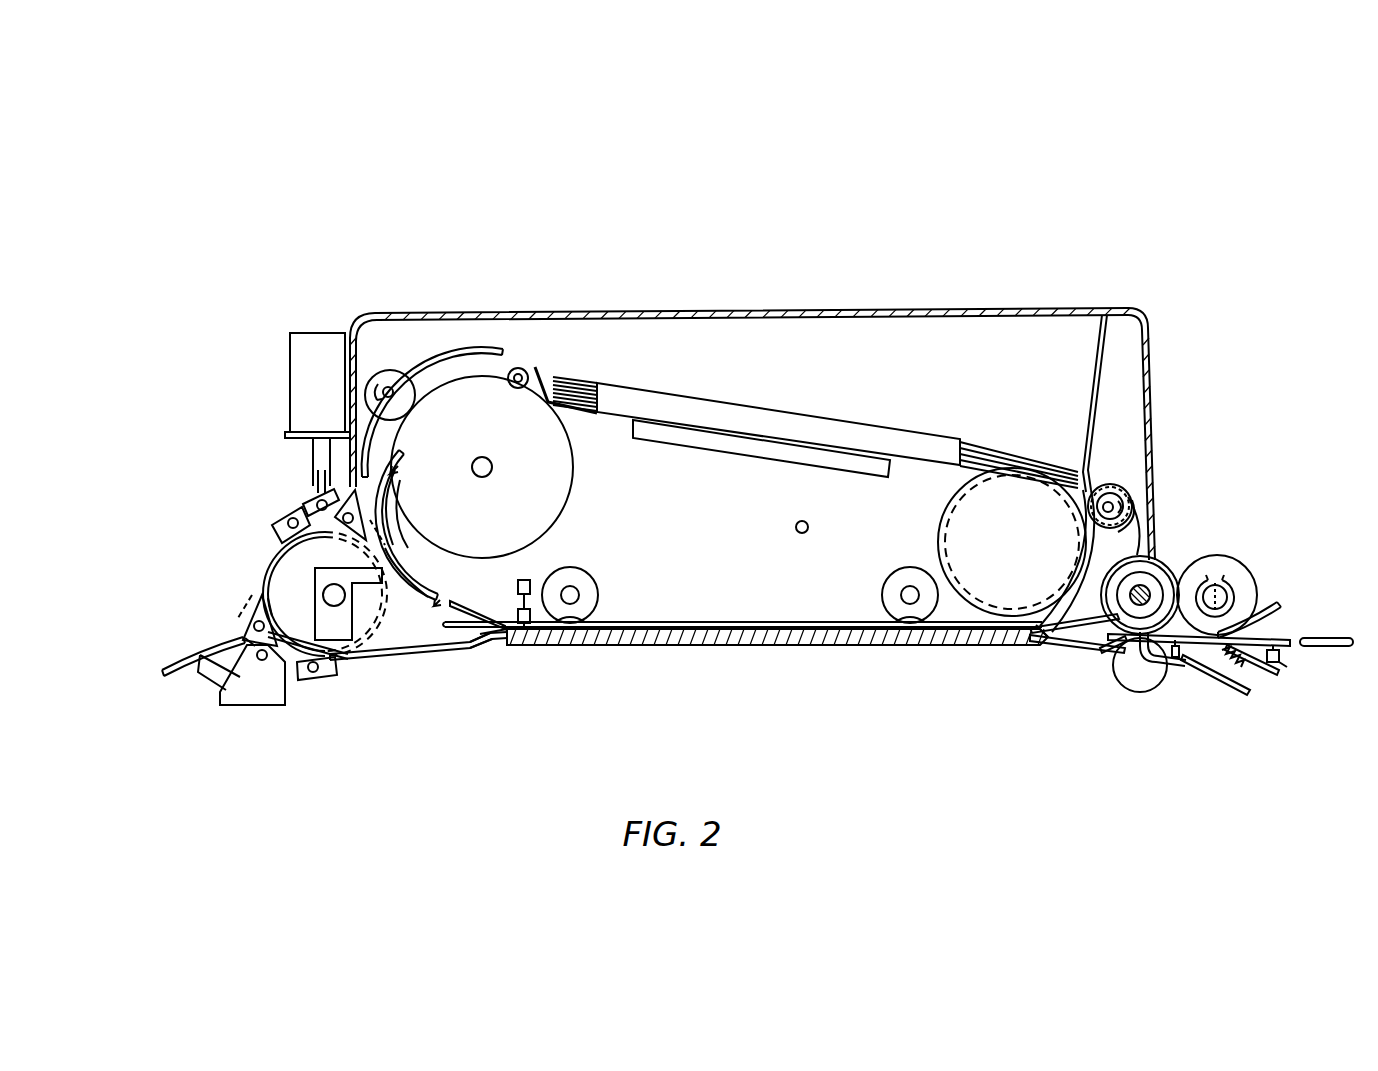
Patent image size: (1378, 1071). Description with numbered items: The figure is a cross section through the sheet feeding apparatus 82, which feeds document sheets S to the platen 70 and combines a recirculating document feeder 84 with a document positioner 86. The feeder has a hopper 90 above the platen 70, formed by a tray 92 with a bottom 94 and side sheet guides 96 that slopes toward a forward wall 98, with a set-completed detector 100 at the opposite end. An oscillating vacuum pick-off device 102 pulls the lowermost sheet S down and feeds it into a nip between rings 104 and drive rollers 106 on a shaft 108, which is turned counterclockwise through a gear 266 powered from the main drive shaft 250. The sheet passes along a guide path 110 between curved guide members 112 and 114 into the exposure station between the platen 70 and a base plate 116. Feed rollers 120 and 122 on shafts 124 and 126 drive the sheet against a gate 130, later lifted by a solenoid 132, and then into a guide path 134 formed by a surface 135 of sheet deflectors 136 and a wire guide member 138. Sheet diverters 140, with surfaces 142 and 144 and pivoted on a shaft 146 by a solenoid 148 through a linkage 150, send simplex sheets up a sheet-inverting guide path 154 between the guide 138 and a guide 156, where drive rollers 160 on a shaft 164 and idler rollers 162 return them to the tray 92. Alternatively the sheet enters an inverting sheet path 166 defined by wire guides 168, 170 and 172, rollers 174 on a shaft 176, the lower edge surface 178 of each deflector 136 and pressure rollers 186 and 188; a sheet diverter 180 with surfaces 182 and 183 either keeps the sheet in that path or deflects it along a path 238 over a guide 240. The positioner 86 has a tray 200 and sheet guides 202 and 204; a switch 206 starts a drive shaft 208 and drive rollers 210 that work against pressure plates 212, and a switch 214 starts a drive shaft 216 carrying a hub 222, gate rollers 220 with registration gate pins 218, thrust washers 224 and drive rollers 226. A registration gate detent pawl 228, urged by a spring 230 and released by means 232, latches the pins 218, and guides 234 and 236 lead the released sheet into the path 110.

The platen 70 is at (760, 648).
The sheet feeding apparatus 82 is at (1157, 380).
The recirculating document feeder 84 is at (1158, 414).
The document positioner 86 is at (1235, 608).
The hopper 90 is at (973, 427).
The tray 92 is at (685, 458).
The bottom 94 is at (608, 421).
The side sheet guides 96 is at (786, 412).
The forward wall 98 is at (1092, 392).
The set-completed detector 100 is at (512, 388).
The oscillating vacuum pick-off device 102 is at (1007, 535).
The rings 104 is at (952, 528).
The drive rollers 106 is at (1112, 484).
The shaft 108 is at (1124, 503).
The guide path 110 is at (1082, 548).
The guide member 112 is at (1150, 540).
The guide member 114 is at (1022, 648).
The base plate 116 is at (748, 622).
The feed roller 120 is at (912, 650).
The feed roller 122 is at (570, 645).
The shaft 124 is at (900, 596).
The shaft 126 is at (583, 592).
The gate 130 is at (520, 648).
The solenoid 132 is at (530, 584).
The guide path 134 is at (440, 598).
The surface 135 is at (463, 610).
The sheet deflectors 136 is at (410, 650).
The wire guide member 138 is at (418, 577).
The sheet diverters 140 is at (338, 500).
The sheet deflecting surface 142 is at (399, 512).
The sheet deflecting surface 144 is at (406, 530).
The shaft 146 is at (316, 506).
The solenoid 148 is at (331, 385).
The linkage 150 is at (312, 490).
The sheet-inverting guide path 154 is at (390, 465).
The guide 156 is at (452, 357).
The drive rollers 160 is at (508, 465).
The idler rollers 162 is at (385, 375).
The shaft 164 is at (486, 473).
The inverting sheet path 166 is at (373, 546).
The wire guide 168 is at (268, 564).
The wire guide 170 is at (314, 646).
The wire guide 172 is at (366, 663).
The rollers 174 is at (306, 584).
The shaft 176 is at (345, 598).
The lower edge surface 178 is at (447, 652).
The sheet diverter 180 is at (248, 602).
The surface 182 is at (273, 611).
The surface 183 is at (245, 612).
The pressure roller 186 is at (288, 524).
The pressure roller 188 is at (320, 680).
The tray 200 is at (1332, 638).
The sheet guide 202 is at (1281, 607).
The sheet guide 204 is at (1272, 640).
The switch 206 is at (1287, 664).
The drive shaft 208 is at (1228, 598).
The drive rollers 210 is at (1232, 570).
The pressure plates 212 is at (1226, 690).
The switch 214 is at (1176, 672).
The drive shaft 216 is at (1118, 586).
The registration gate pins 218 is at (1135, 664).
The gate rollers 220 is at (1112, 650).
The hub 222 is at (1130, 596).
The thrust washers 224 is at (1192, 588).
The drive rollers 226 is at (1157, 568).
The registration gate detent pawl 228 is at (1136, 690).
The spring 230 is at (1262, 672).
The release means 232 is at (1206, 705).
The guide 234 is at (1060, 642).
The guide 236 is at (1070, 650).
The path 238 is at (176, 662).
The guide 240 is at (215, 687).
The main drive shaft 250 is at (810, 522).
The gear 266 is at (1128, 497).
The document sheet S is at (1000, 456).